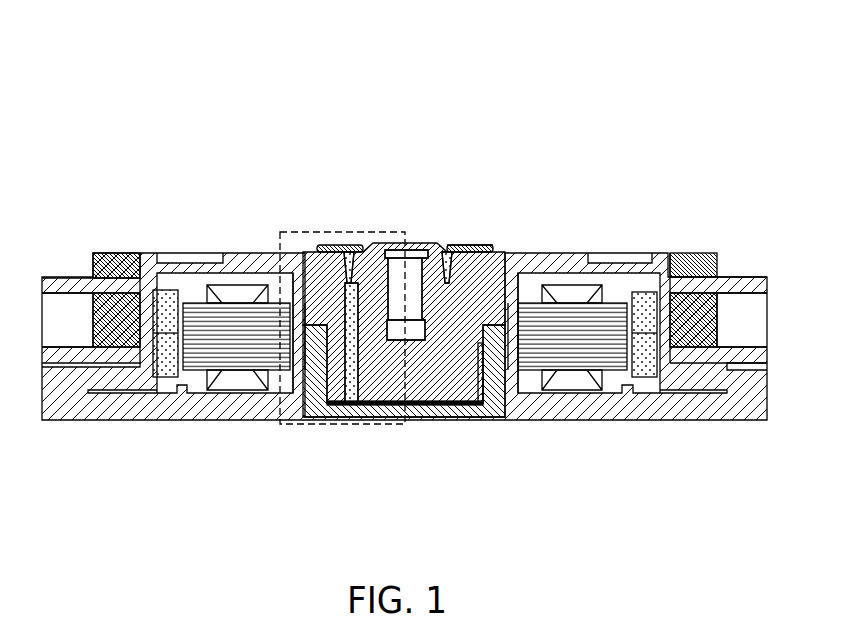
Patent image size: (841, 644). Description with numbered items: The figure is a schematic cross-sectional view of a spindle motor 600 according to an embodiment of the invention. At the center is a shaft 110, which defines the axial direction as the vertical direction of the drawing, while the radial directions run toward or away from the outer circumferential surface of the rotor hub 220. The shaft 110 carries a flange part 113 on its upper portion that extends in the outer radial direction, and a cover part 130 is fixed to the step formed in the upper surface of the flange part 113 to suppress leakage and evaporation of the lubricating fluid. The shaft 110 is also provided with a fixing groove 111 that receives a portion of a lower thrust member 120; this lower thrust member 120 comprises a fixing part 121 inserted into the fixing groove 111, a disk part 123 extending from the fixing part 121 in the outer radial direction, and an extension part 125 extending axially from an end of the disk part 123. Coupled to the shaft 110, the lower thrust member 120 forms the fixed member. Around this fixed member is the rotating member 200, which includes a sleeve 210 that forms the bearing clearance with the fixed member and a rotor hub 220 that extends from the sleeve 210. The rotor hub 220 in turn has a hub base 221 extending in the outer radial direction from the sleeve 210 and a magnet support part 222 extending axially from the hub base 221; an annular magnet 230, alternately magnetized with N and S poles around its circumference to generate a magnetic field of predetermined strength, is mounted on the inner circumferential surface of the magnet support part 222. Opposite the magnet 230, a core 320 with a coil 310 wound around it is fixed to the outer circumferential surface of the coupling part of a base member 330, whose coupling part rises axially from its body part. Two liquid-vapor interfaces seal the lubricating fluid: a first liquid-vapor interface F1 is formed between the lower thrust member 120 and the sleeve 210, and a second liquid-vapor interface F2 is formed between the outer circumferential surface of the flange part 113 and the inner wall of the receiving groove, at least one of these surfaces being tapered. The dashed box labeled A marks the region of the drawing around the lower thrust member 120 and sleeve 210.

The rotating member 200 is at (108, 122).
The spindle motor 600 is at (313, 60).
The sleeve 210 is at (295, 255).
The rotor hub 220 is at (177, 162).
The hub base 221 is at (228, 254).
The magnet support part 222 is at (127, 254).
The magnet 230 is at (157, 350).
The shaft 110 is at (472, 182).
The flange part 113 is at (377, 249).
The fixing groove 111 is at (429, 247).
The cover part 130 is at (337, 244).
The lower thrust member 120 is at (423, 477).
The extension part 125 is at (310, 404).
The disk part 123 is at (352, 402).
The fixing part 121 is at (397, 403).
The coil 310 is at (593, 375).
The core 320 is at (573, 355).
The base member 330 is at (517, 382).
The first liquid-vapor interface F1 is at (481, 345).
The second liquid-vapor interface F2 is at (472, 243).
The enlarged region A is at (282, 425).